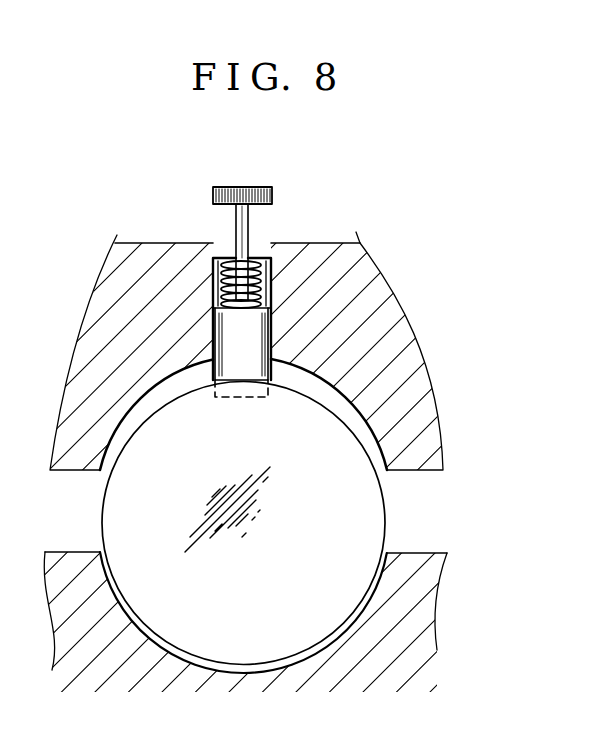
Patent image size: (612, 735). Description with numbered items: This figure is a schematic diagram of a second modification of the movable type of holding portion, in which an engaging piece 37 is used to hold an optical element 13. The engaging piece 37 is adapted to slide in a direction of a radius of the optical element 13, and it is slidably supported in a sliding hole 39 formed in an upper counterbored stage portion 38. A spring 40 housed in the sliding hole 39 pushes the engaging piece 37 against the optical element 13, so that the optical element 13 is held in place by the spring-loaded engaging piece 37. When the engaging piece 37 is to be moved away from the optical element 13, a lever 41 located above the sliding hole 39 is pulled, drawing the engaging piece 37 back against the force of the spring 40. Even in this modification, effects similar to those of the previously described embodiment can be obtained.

The optical element 13 is at (384, 512).
The engaging piece 37 is at (253, 347).
The upper counterbored stage portion 38 is at (418, 412).
The sliding hole 39 is at (259, 257).
The spring 40 is at (218, 283).
The lever 41 is at (250, 185).